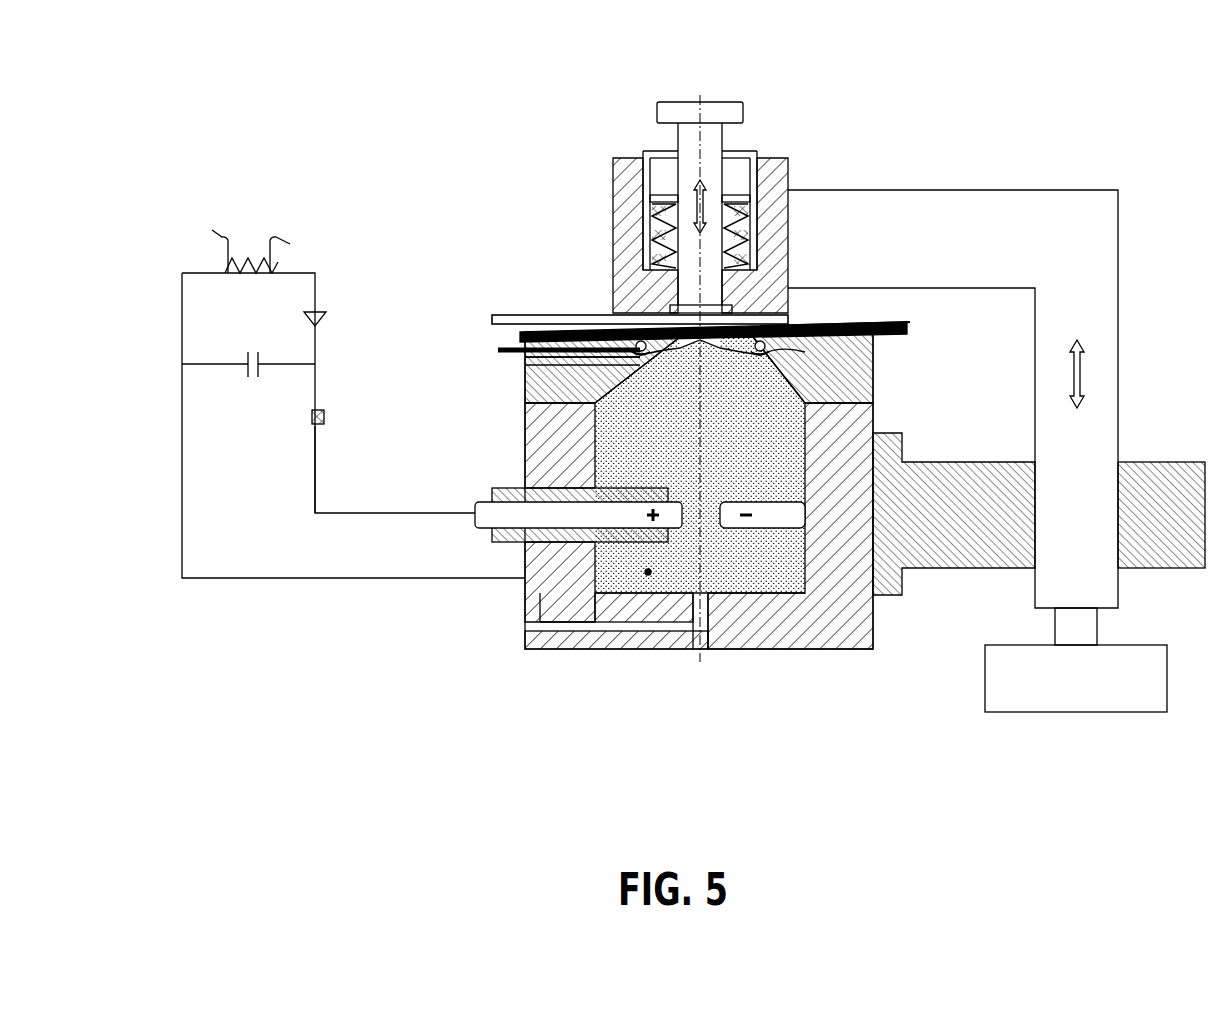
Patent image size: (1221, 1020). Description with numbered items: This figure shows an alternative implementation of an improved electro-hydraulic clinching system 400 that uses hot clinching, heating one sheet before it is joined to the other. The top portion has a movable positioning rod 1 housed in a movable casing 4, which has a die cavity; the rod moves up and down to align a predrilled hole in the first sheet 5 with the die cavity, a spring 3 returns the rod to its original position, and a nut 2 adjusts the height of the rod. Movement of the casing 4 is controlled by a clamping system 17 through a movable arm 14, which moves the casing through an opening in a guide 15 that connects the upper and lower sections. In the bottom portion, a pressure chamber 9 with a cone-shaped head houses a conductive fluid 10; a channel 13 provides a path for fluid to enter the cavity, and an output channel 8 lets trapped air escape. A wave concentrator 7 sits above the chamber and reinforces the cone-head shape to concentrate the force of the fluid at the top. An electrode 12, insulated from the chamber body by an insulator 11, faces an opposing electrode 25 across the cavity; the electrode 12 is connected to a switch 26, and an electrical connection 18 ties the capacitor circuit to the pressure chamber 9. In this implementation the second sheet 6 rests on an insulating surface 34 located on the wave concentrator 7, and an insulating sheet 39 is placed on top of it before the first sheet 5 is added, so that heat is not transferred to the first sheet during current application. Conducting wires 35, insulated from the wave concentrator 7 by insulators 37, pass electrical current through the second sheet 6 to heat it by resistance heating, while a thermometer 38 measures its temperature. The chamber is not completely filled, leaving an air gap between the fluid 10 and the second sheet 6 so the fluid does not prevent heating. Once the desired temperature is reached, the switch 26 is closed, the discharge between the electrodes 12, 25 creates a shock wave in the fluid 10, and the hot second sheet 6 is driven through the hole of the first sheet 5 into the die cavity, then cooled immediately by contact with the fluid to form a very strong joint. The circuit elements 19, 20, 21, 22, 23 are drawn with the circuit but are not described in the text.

The apparatus 400 is at (194, 80).
The movable positioning rod 1 is at (745, 112).
The nut 2 is at (655, 150).
The spring 3 is at (652, 234).
The movable casing 4 is at (614, 180).
The first sheet 5 is at (560, 313).
The second sheet 6 is at (888, 333).
The wave concentrator 7 is at (878, 392).
The output channel 8 is at (525, 362).
The pressure chamber 9 is at (757, 652).
The fluid 10 is at (642, 600).
The insulator 11 is at (522, 482).
The electrode 12 is at (492, 490).
The channel 13 is at (540, 629).
The movable arm 14 is at (1033, 585).
The guide 15 is at (930, 462).
The clamping system 17 is at (985, 672).
The electrical connection 18 is at (182, 462).
The wire 19 is at (314, 465).
The capacitor 20 is at (245, 385).
The resistor 21 is at (252, 276).
The switch 22 is at (326, 312).
The terminal 23 is at (218, 234).
The opposing electrode 25 is at (760, 510).
The switch 26 is at (330, 424).
The insulating surface 34 is at (880, 350).
The conducting wires 35 is at (535, 393).
The insulators 37 is at (903, 322).
The thermometer 38 is at (498, 348).
The insulating sheet 39 is at (822, 322).